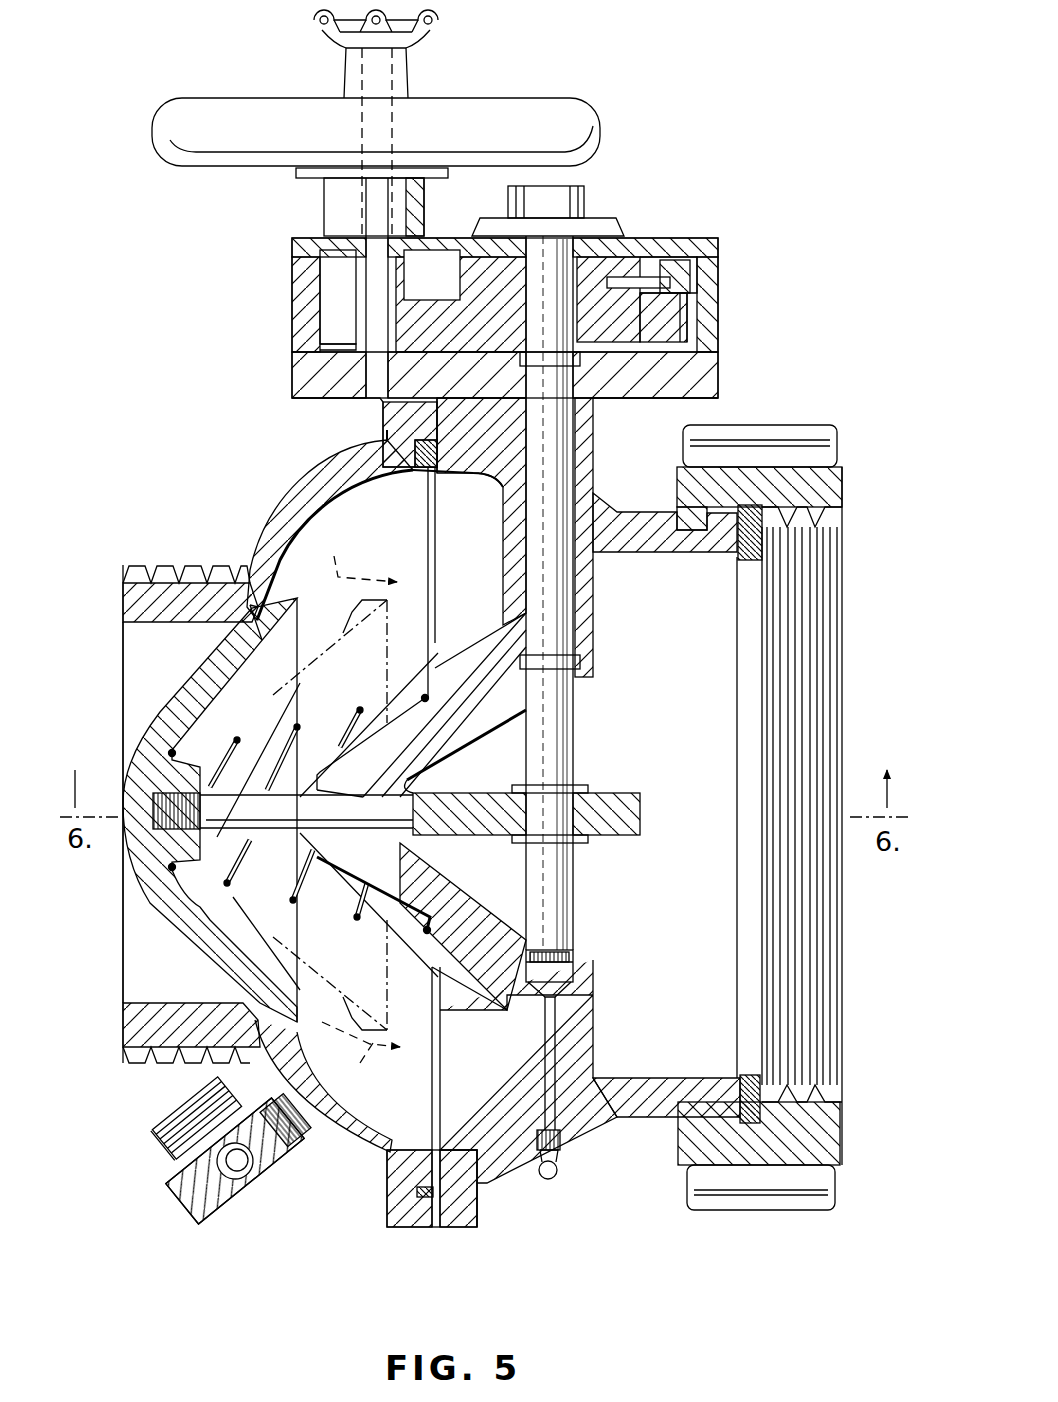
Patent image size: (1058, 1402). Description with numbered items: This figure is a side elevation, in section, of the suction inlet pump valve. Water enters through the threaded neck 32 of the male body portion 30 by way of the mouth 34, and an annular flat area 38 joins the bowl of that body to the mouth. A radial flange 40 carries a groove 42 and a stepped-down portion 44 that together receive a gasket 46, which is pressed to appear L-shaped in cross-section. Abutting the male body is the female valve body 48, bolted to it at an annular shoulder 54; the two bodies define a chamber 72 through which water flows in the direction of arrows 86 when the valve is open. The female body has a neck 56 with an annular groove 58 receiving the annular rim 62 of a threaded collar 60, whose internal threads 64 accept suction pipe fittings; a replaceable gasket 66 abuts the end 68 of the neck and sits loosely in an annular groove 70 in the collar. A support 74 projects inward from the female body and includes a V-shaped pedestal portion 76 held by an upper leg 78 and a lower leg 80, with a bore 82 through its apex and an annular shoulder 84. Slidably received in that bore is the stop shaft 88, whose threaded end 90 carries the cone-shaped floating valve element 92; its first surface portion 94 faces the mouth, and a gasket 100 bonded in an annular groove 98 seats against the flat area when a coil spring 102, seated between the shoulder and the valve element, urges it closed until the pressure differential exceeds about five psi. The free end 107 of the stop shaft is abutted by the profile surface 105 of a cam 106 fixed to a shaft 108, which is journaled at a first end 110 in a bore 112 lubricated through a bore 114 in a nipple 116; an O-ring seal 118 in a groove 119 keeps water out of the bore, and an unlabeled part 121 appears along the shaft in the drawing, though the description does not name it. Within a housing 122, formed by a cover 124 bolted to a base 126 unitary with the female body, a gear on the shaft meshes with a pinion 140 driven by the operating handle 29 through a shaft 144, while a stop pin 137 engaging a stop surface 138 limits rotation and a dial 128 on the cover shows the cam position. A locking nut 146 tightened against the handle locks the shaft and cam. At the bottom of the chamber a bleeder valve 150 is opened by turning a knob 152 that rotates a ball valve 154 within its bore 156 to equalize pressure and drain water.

The operating handle 29 is at (594, 108).
The male body portion 30 is at (288, 492).
The threaded neck 32 is at (123, 602).
The mouth 34 is at (139, 982).
The annular flat area 38 is at (262, 586).
The radial flange 40 is at (420, 1230).
The groove 42 is at (400, 444).
The stepped-down portion 44 is at (418, 470).
The gasket 46 is at (428, 470).
The female valve body 48 is at (522, 1182).
The annular shoulder 54 is at (482, 1228).
The neck 56 is at (662, 1118).
The annular groove 58 is at (682, 554).
The threaded collar 60 is at (842, 484).
The annular rim 62 is at (680, 514).
The threads 64 is at (838, 704).
The gasket 66 is at (745, 556).
The end of neck 68 is at (740, 1084).
The annular groove 70 is at (686, 472).
The chamber 72 is at (344, 559).
The support 74 is at (575, 766).
The V-shaped pedestal portion 76 is at (355, 748).
The upper leg 78 is at (503, 590).
The lower leg 80 is at (500, 1078).
The bore 82 is at (418, 712).
The annular shoulder 84 is at (413, 667).
The arrows 86 is at (348, 808).
The stop shaft 88 is at (300, 795).
The threaded end 90 is at (212, 862).
The floating valve element 92 is at (230, 655).
The first surface portion 94 is at (150, 712).
The annular groove 98 is at (305, 642).
The gasket 100 is at (250, 612).
The coil spring 102 is at (332, 924).
The profile surface 105 is at (432, 786).
The cam 106 is at (640, 824).
The free end 107 is at (447, 850).
The shaft 108 is at (575, 716).
The first end 110 is at (578, 977).
The bore 112 is at (560, 1000).
The bore 114 is at (560, 1064).
The nipple 116 is at (560, 1170).
The O-ring seal 118 is at (578, 954).
The groove 119 is at (505, 999).
The shaft 121 is at (548, 238).
The housing 122 is at (718, 316).
The cover 124 is at (718, 266).
The base 126 is at (718, 372).
The dial 128 is at (512, 224).
The stop pin 137 is at (652, 277).
The stop surface 138 is at (680, 262).
The pinion 140 is at (322, 308).
The shaft 144 is at (366, 228).
The locking nut 146 is at (432, 30).
The bleeder valve 150 is at (244, 1200).
The knob 152 is at (172, 1138).
The ball valve 154 is at (200, 1215).
The bore 156 is at (256, 1162).